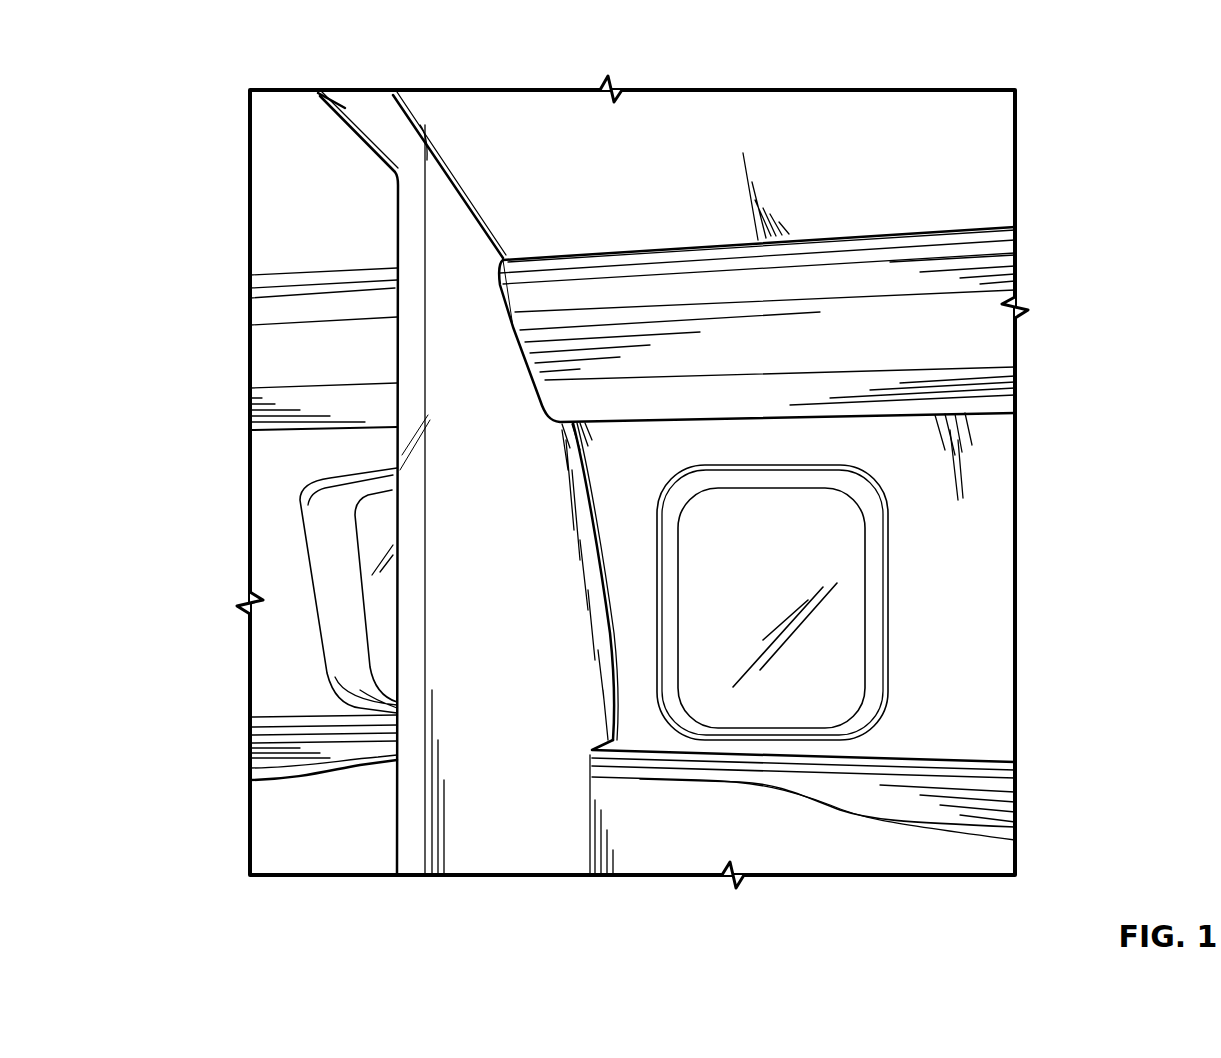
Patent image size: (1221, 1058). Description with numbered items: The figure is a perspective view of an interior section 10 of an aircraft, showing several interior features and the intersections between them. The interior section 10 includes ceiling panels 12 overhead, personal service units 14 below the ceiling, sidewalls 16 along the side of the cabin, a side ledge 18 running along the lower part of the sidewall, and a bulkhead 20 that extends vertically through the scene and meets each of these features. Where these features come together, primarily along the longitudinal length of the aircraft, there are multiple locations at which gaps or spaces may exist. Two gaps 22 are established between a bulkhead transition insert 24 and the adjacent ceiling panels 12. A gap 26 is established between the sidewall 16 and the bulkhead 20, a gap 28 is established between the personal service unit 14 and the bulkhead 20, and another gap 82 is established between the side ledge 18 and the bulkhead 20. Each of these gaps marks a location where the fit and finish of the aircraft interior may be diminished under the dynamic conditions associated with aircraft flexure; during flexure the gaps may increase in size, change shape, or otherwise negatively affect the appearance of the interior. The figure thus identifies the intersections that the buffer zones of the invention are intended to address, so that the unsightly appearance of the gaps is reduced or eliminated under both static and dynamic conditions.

The interior section 10 is at (864, 118).
The ceiling panels 12 is at (844, 191).
The personal service units 14 is at (632, 363).
The sidewalls 16 is at (635, 602).
The side ledge 18 is at (900, 803).
The bulkhead 20 is at (465, 660).
The gaps 22 is at (430, 128).
The bulkhead transition insert 24 is at (343, 102).
The gap 26 is at (610, 643).
The gap 28 is at (527, 327).
The gap 82 is at (590, 843).